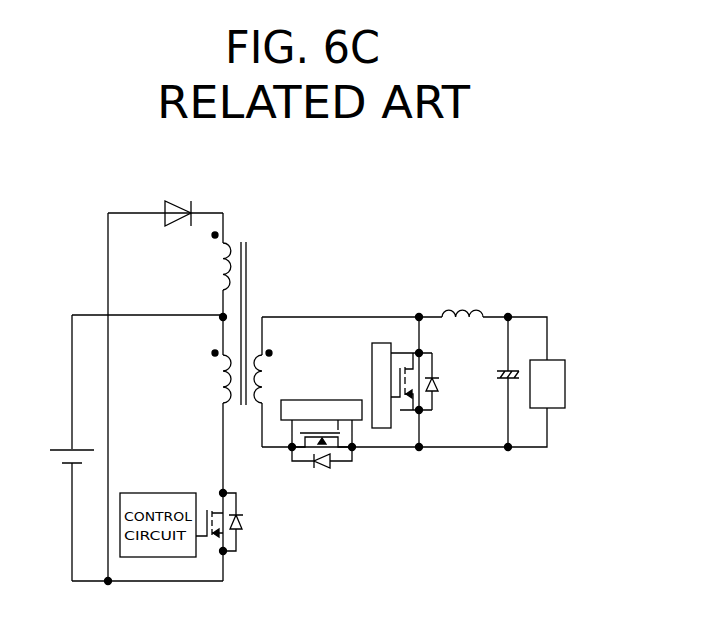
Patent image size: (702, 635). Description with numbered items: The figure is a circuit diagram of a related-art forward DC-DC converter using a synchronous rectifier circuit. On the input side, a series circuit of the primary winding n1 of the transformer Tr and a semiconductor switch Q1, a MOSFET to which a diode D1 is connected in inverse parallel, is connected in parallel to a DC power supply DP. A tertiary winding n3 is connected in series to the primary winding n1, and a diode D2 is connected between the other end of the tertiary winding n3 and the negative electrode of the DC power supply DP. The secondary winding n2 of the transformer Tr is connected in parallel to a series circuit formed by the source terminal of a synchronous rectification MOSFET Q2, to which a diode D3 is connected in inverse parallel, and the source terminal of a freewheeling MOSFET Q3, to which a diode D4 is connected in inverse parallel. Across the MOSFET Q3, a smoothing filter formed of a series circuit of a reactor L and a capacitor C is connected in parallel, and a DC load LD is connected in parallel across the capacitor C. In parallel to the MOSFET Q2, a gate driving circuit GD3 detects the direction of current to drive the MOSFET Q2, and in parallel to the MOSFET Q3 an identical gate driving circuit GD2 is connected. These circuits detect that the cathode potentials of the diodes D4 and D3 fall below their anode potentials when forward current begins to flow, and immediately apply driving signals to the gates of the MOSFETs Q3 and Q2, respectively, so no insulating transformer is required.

The DC power supply DP is at (62, 448).
The diode D2 is at (165, 198).
The transformer Tr is at (258, 311).
The primary winding n1 is at (208, 376).
The secondary winding n2 is at (277, 376).
The tertiary winding n3 is at (209, 261).
The semiconductor switch Q1 is at (207, 509).
The diode D1 is at (251, 522).
The synchronous rectification MOSFET Q2 is at (303, 448).
The diode D3 is at (325, 471).
The gate driving circuit GD3 is at (321, 398).
The gate driving circuit GD2 is at (372, 372).
The freewheeling MOSFET Q3 is at (411, 367).
The diode D4 is at (451, 386).
The reactor L is at (462, 294).
The capacitor C is at (498, 360).
The DC load LD is at (566, 378).